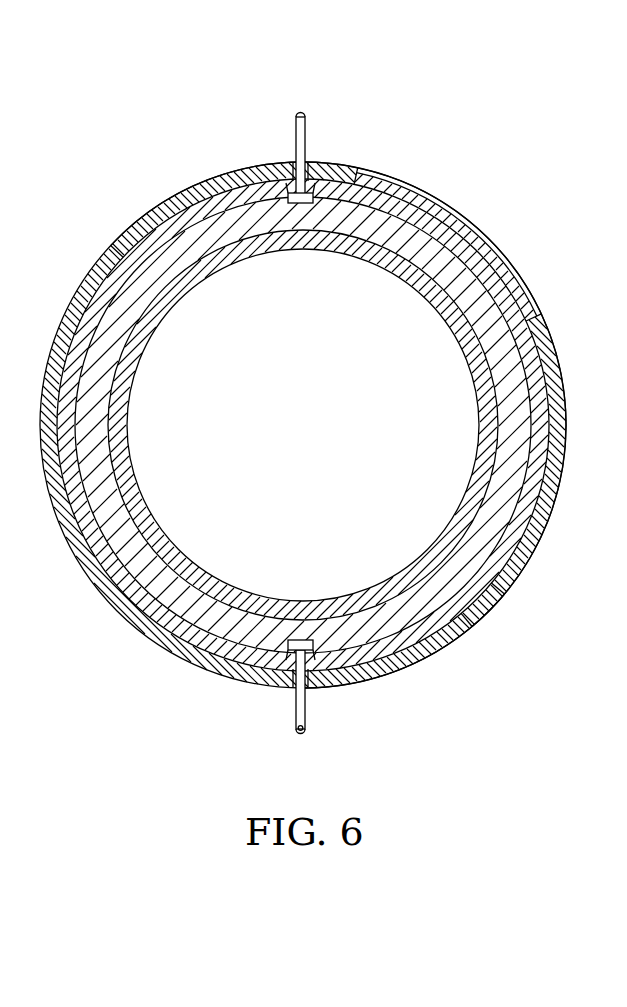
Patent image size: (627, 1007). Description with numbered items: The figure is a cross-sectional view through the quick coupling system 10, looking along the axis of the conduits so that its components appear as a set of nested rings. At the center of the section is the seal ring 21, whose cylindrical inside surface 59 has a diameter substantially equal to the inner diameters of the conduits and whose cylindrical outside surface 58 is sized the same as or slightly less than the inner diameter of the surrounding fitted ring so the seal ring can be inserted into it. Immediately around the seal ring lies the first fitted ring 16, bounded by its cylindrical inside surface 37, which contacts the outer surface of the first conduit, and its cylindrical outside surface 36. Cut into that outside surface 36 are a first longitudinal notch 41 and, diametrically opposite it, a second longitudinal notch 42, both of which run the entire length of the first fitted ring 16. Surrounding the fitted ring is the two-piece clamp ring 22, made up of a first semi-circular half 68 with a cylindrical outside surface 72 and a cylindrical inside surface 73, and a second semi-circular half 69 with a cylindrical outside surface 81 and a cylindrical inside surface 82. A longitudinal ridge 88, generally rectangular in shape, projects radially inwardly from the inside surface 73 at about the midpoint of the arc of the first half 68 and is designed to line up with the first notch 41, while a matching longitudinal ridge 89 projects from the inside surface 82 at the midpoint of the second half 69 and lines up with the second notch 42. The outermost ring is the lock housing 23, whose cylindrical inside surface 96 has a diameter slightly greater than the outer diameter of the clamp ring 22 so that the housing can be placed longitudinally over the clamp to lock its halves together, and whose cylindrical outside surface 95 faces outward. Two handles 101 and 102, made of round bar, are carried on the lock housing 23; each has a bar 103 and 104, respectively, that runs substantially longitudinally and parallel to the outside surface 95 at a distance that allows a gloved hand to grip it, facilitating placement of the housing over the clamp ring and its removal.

The quick coupling system 10 is at (407, 143).
The first fitted ring 16 is at (223, 620).
The seal ring 21 is at (303, 425).
The two-piece clamp ring 22 is at (448, 232).
The lock housing 23 is at (567, 275).
The cylindrical outside surface 36 is at (303, 421).
The cylindrical inside surface 37 is at (303, 425).
The first longitudinal notch 41 is at (303, 203).
The second longitudinal notch 42 is at (297, 641).
The cylindrical outside surface 58 is at (152, 305).
The cylindrical inside surface 59 is at (410, 565).
The first semi-circular half 68 is at (473, 240).
The second semi-circular half 69 is at (417, 653).
The cylindrical outside surface 72 is at (234, 175).
The cylindrical inside surface 73 is at (107, 243).
The cylindrical outside surface 81 is at (507, 590).
The cylindrical inside surface 82 is at (470, 627).
The longitudinal ridge 88 is at (282, 162).
The longitudinal ridge 89 is at (328, 688).
The cylindrical outside surface 95 is at (542, 315).
The cylindrical inside surface 96 is at (200, 182).
The handle 101 is at (343, 122).
The handle 102 is at (227, 697).
The bar 103 is at (305, 137).
The bar 104 is at (296, 707).